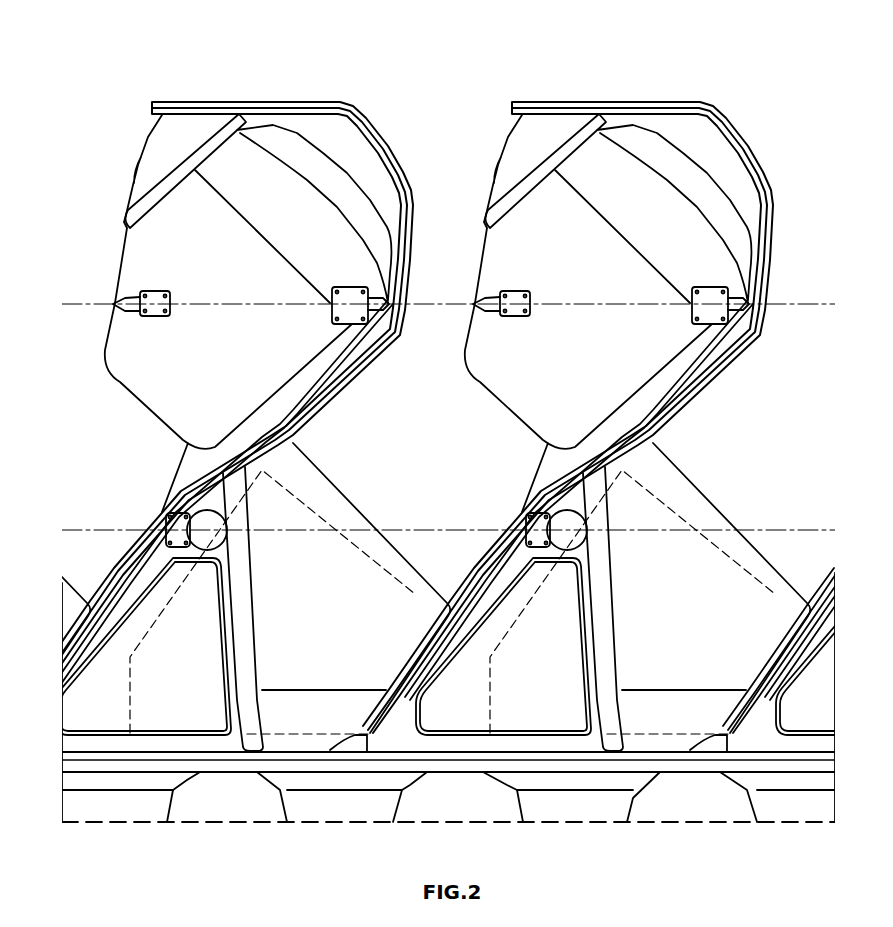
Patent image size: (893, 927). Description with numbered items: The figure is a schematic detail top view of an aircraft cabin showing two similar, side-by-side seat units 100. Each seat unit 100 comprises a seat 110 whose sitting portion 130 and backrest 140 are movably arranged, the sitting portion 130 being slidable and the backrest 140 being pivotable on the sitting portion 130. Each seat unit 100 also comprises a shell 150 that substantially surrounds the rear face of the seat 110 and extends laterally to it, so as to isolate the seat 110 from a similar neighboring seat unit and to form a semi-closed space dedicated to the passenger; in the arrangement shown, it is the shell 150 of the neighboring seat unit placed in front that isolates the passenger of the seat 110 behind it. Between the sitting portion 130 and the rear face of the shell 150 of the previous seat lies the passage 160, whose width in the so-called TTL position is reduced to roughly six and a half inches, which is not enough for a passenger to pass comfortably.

The seat unit 100 is at (329, 137).
The seat 110 is at (268, 223).
The sitting portion 130 is at (188, 355).
The backrest 140 is at (285, 148).
The shell 150 is at (192, 101).
The passage 160 is at (448, 283).